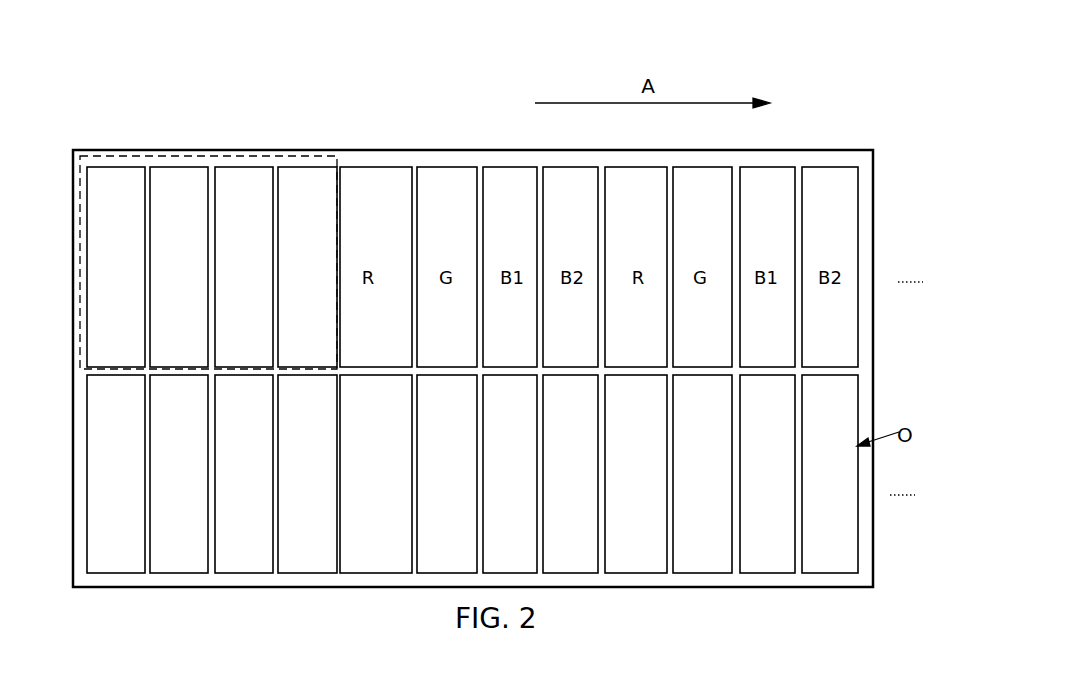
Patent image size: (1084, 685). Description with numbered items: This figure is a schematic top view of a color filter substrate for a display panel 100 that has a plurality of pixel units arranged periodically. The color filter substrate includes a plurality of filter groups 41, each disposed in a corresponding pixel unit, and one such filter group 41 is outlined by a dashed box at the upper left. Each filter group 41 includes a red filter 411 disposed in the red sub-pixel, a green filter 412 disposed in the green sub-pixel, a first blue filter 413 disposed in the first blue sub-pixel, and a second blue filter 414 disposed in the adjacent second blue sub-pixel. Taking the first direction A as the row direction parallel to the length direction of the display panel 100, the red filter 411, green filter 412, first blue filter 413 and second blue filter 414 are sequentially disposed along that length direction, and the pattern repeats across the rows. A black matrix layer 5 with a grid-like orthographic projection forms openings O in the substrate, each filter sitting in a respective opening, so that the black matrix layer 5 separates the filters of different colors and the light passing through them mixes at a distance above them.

The display panel 100 is at (823, 107).
The filter group 41 is at (98, 153).
The red filter 411 is at (107, 230).
The green filter 412 is at (172, 237).
The first blue filter 413 is at (245, 230).
The second blue filter 414 is at (312, 235).
The black matrix layer 5 is at (856, 369).